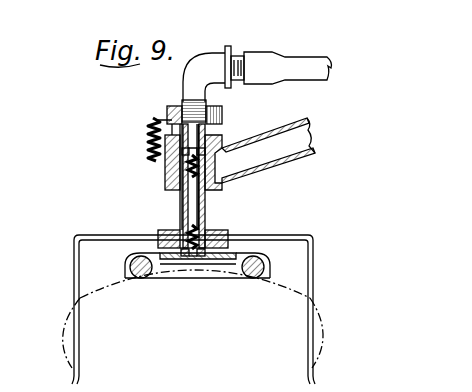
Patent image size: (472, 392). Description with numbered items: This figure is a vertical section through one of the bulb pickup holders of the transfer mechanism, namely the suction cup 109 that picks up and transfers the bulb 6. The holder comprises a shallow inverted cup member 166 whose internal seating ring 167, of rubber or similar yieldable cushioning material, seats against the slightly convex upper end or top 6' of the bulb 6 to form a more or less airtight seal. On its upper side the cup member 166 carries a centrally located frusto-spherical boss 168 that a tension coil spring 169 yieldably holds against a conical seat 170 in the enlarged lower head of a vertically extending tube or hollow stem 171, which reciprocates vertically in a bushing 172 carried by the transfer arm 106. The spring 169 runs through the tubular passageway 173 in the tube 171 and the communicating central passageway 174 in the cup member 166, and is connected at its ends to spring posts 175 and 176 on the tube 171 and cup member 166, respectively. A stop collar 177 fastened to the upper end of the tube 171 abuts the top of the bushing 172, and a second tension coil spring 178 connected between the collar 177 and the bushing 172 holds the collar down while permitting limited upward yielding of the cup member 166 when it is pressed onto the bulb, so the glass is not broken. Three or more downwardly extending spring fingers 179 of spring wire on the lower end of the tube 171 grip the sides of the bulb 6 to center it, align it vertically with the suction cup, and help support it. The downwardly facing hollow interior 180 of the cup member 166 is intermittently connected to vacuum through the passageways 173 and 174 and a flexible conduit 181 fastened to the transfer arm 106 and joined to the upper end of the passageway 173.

The bulb 6 is at (167, 319).
The upper end or top of the bulb 6' is at (319, 322).
The transfer arm 106 is at (290, 167).
The suction cup 109 is at (117, 208).
The cup member 166 is at (265, 265).
The internal seating ring 167 is at (222, 266).
The frusto-spherical boss 168 is at (148, 254).
The tension coil spring 169 is at (222, 230).
The conical seat 170 is at (230, 236).
The tube or hollow stem 171 is at (213, 194).
The bushing 172 is at (166, 178).
The tubular passageway 173 is at (183, 206).
The central passageway 174 is at (183, 260).
The spring post 175 is at (214, 126).
The spring post 176 is at (199, 260).
The stop collar 177 is at (180, 103).
The tension coil spring 178 is at (148, 139).
The spring fingers 179 is at (74, 275).
The hollow interior 180 is at (156, 274).
The flexible conduit 181 is at (289, 60).